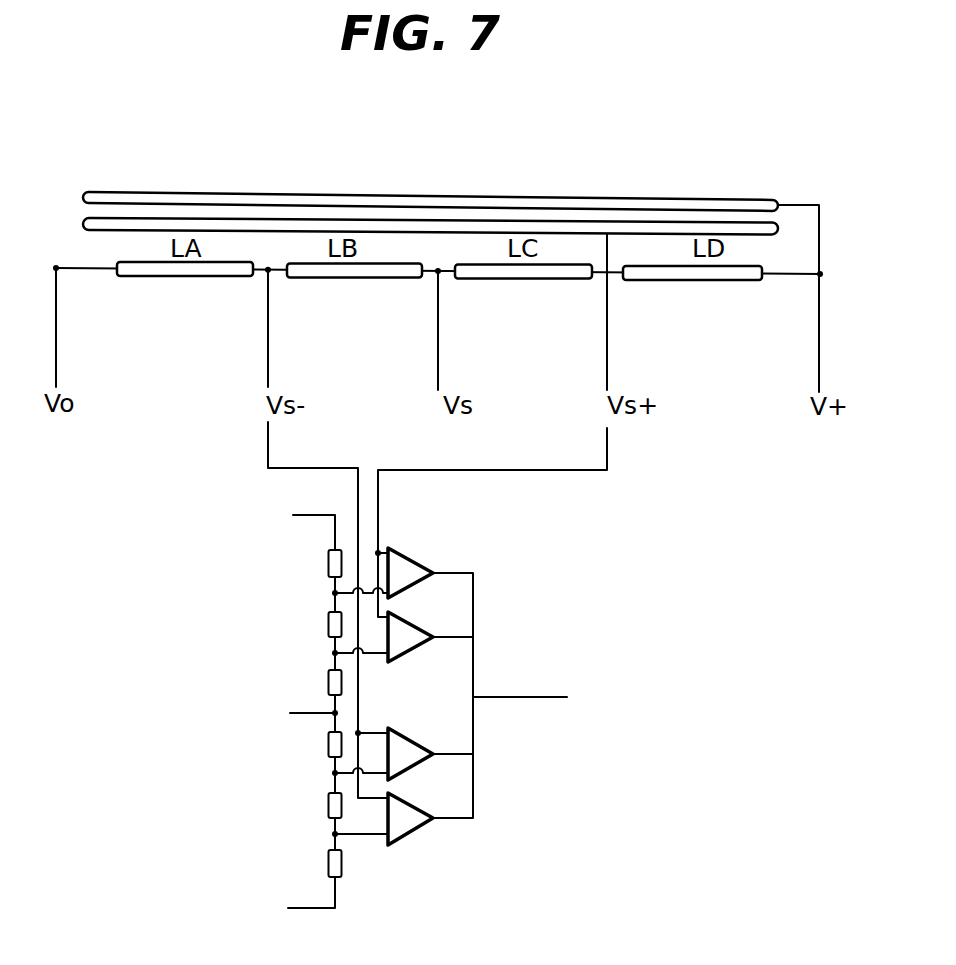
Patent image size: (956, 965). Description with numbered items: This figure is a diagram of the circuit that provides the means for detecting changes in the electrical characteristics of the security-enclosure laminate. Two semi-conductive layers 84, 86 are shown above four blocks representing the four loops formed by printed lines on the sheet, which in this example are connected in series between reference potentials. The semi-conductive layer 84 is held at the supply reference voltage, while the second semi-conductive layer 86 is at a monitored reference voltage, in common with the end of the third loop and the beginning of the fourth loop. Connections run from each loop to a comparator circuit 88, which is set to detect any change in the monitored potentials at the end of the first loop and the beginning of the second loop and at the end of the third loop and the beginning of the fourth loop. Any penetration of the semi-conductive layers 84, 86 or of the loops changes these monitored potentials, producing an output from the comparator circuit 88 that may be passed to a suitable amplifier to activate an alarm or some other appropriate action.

The semi-conductive layer 84 is at (278, 195).
The second semi-conductive layer 86 is at (363, 219).
The comparator circuit 88 is at (532, 624).